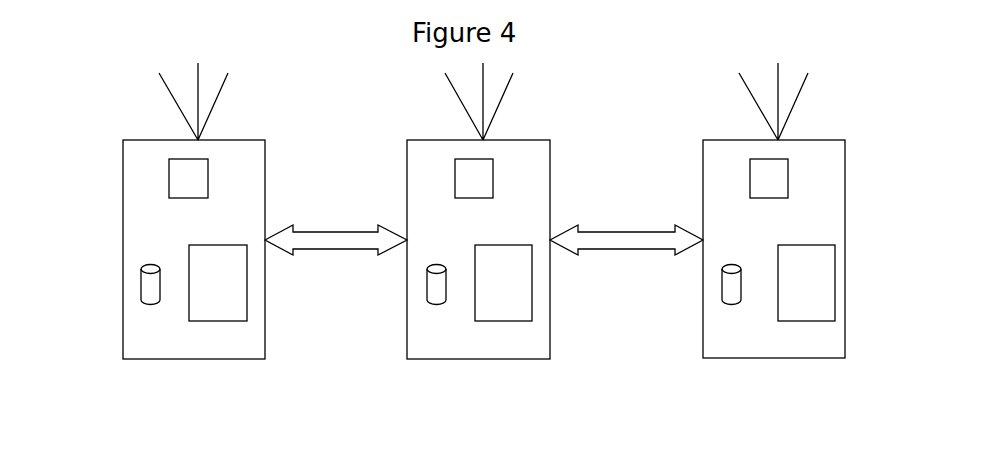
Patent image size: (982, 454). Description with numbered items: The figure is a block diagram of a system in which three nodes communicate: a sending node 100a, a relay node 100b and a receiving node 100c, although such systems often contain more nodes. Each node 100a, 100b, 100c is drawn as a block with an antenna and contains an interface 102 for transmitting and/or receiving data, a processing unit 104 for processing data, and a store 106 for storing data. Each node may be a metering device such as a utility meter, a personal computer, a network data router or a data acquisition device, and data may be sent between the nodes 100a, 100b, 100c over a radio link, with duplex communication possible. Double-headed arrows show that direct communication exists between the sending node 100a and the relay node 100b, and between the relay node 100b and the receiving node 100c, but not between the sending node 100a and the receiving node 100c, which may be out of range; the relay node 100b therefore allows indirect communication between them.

The sending node 100a is at (195, 359).
The relay node 100b is at (450, 359).
The receiving node 100c is at (747, 358).
The interface 102 is at (208, 177).
The processing unit 104 is at (247, 283).
The store 106 is at (141, 285).